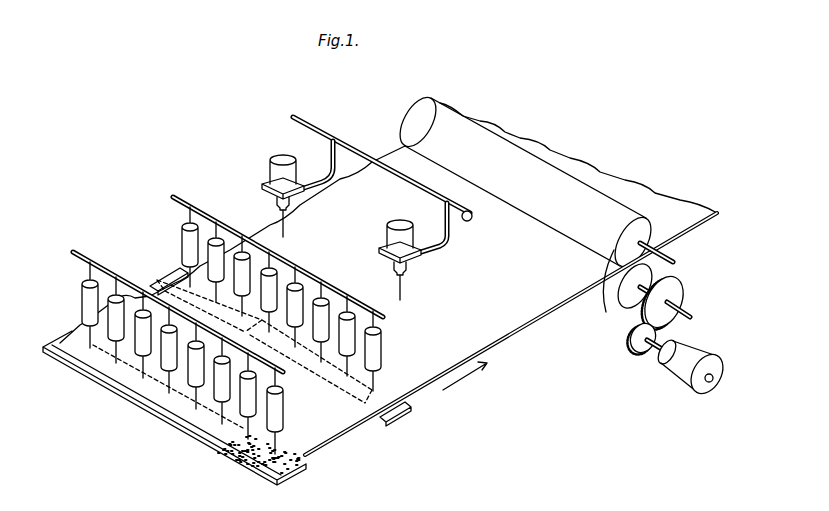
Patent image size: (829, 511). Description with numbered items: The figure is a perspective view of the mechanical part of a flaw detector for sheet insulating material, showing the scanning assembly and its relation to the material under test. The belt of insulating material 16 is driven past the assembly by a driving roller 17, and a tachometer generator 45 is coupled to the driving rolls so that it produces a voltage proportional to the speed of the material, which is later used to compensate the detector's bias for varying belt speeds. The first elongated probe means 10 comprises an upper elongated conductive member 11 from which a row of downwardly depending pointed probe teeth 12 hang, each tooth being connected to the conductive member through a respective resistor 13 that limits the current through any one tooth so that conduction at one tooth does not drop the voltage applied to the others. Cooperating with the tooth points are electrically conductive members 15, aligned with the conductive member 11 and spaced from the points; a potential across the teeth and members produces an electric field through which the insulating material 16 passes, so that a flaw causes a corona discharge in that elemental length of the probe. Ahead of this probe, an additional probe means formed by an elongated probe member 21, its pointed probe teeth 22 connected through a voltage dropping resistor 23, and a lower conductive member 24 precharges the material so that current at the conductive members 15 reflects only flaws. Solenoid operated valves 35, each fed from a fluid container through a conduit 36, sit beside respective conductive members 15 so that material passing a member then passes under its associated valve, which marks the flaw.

The first elongated probe means 10 is at (310, 262).
The upper elongated conductive member 11 is at (324, 284).
The pointed probe teeth 12 is at (378, 393).
The resistors 13 is at (382, 350).
The electrically conductive members 15 is at (167, 277).
The insulating material 16 is at (548, 298).
The driving roller 17 is at (620, 303).
The elongated probe member 21 is at (111, 270).
The pointed probe teeth 22 is at (305, 456).
The voltage dropping resistor 23 is at (284, 397).
The lower conductive member 24 is at (58, 342).
The solenoid operated valves 35 is at (276, 200).
The conduit 36 is at (338, 141).
The tachometer generator 45 is at (683, 377).